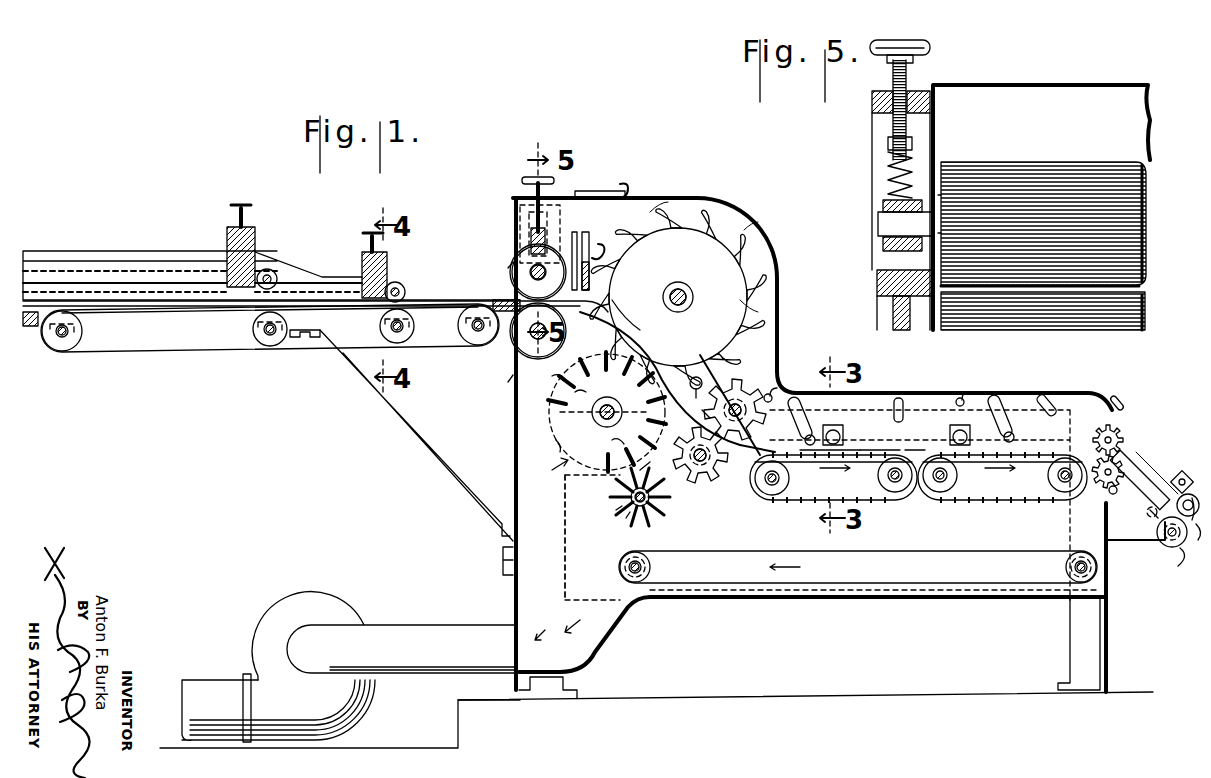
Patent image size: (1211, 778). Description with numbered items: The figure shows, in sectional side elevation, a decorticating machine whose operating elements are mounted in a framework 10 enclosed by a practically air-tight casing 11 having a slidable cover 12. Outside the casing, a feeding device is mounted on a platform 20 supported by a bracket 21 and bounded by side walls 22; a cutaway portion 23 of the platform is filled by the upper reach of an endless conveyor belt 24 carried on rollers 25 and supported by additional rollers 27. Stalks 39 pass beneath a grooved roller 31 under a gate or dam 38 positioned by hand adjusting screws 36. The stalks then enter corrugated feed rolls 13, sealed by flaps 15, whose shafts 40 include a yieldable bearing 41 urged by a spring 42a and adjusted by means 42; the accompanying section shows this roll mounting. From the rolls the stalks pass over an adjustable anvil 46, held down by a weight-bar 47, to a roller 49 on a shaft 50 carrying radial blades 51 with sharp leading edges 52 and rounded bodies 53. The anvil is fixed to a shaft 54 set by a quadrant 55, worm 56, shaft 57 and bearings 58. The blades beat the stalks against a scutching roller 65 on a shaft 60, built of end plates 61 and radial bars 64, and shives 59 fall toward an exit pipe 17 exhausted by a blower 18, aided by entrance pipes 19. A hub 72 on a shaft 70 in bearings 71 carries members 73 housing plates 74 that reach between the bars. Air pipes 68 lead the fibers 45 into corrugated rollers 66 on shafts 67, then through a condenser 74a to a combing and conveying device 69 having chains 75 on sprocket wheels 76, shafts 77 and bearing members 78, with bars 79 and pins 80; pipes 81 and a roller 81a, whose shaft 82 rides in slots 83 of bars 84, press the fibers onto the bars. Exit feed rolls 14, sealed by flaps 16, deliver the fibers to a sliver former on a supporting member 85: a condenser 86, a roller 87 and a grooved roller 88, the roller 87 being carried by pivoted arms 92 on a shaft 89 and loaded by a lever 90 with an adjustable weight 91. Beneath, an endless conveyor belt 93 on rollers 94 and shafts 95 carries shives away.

In FIG. 1, the framework 10 is at (1070, 628).
In FIG. 1, the casing 11 is at (880, 393).
In FIG. 1, the slidable cover 12 is at (596, 191).
In FIG. 1, the feed rolls 13 is at (522, 345).
In FIG. 5, the feed rolls 13 is at (1148, 310).
In FIG. 1, the feed rolls 14 is at (1108, 484).
In FIG. 1, the flaps 15 is at (513, 376).
In FIG. 1, the flaps 16 is at (1116, 492).
In FIG. 1, the exit pipe 17 is at (460, 680).
In FIG. 1, the exhaust blower 18 is at (293, 598).
In FIG. 1, the entrance pipes 19 is at (1052, 398).
In FIG. 1, the platform 20 is at (30, 328).
In FIG. 1, the bracket 21 is at (398, 412).
In FIG. 1, the side walls 22 is at (271, 264).
In FIG. 1, the cutaway portion 23 is at (162, 320).
In FIG. 1, the endless conveyor belt 24 is at (222, 314).
In FIG. 1, the rollers 25 is at (478, 340).
In FIG. 1, the additional rollers 27 is at (395, 342).
In FIG. 1, the roller 31 is at (402, 290).
In FIG. 1, the hand adjusting screws 36 is at (368, 250).
In FIG. 1, the gate or dam 38 is at (387, 266).
In FIG. 1, the stalks 39 is at (495, 298).
In FIG. 1, the shafts 40 is at (522, 345).
In FIG. 5, the shafts 40 is at (878, 228).
In FIG. 1, the bearings 41 is at (548, 266).
In FIG. 5, the bearings 41 is at (883, 206).
In FIG. 1, the raising and lowering means 42 is at (522, 181).
In FIG. 5, the raising and lowering means 42 is at (910, 74).
In FIG. 1, the spring 42a is at (545, 235).
In FIG. 5, the spring 42a is at (888, 172).
In FIG. 1, the fibrous portion 45 is at (1182, 568).
In FIG. 1, the anvil 46 is at (612, 294).
In FIG. 1, the weight-bar 47 is at (590, 268).
In FIG. 1, the roller 49 is at (703, 222).
In FIG. 1, the shaft 50 is at (688, 292).
In FIG. 1, the blades 51 is at (760, 262).
In FIG. 1, the leading edge 52 is at (778, 294).
In FIG. 1, the rounded body 53 is at (762, 300).
In FIG. 1, the shaft 54 is at (618, 306).
In FIG. 1, the quadrant 55 is at (538, 331).
In FIG. 1, the worm 56 is at (552, 404).
In FIG. 1, the shaft 57 is at (552, 382).
In FIG. 1, the bearings 58 is at (580, 390).
In FIG. 1, the shives 59 is at (614, 302).
In FIG. 1, the shaft 60 is at (601, 428).
In FIG. 1, the end plates 61 is at (553, 446).
In FIG. 1, the bars 64 is at (613, 441).
In FIG. 1, the scutching roller 65 is at (548, 473).
In FIG. 1, the corrugated rollers 66 is at (708, 470).
In FIG. 1, the shafts 67 is at (702, 490).
In FIG. 1, the pipes 68 is at (702, 382).
In FIG. 1, the combing and conveying device 69 is at (918, 490).
In FIG. 1, the shaft 70 is at (633, 520).
In FIG. 1, the bearings 71 is at (565, 506).
In FIG. 1, the hub 72 is at (652, 516).
In FIG. 1, the members 73 is at (620, 508).
In FIG. 1, the plates 74 is at (668, 496).
In FIG. 1, the condenser 74a is at (757, 458).
In FIG. 1, the endless conveyor chains 75 is at (996, 494).
In FIG. 1, the sprocket wheels 76 is at (897, 494).
In FIG. 1, the shafts 77 is at (935, 490).
In FIG. 1, the bearing members 78 is at (900, 446).
In FIG. 1, the bars 79 is at (828, 450).
In FIG. 1, the pins 80 is at (862, 450).
In FIG. 1, the pipes 81 is at (992, 418).
In FIG. 1, the roller 81a is at (879, 428).
In FIG. 1, the shaft 82 is at (957, 424).
In FIG. 1, the slots 83 is at (960, 386).
In FIG. 1, the bars 84 is at (953, 438).
In FIG. 1, the supporting member 85 is at (1125, 541).
In FIG. 1, the condenser 86 is at (1152, 466).
In FIG. 1, the roller 87 is at (1192, 528).
In FIG. 1, the grooved roller 88 is at (1174, 548).
In FIG. 1, the shaft 89 is at (1155, 518).
In FIG. 1, the lever 90 is at (1179, 473).
In FIG. 1, the adjustable weight 91 is at (1190, 496).
In FIG. 1, the pivoted arms 92 is at (1196, 522).
In FIG. 1, the endless conveyor belt 93 is at (808, 585).
In FIG. 1, the rollers 94 is at (1066, 567).
In FIG. 1, the shafts 95 is at (1088, 578).